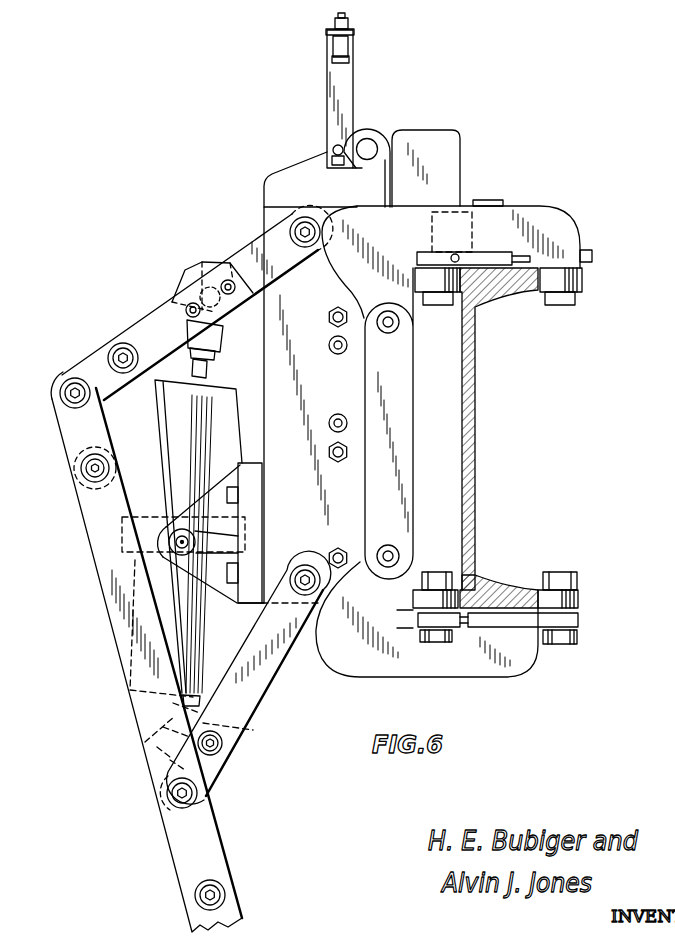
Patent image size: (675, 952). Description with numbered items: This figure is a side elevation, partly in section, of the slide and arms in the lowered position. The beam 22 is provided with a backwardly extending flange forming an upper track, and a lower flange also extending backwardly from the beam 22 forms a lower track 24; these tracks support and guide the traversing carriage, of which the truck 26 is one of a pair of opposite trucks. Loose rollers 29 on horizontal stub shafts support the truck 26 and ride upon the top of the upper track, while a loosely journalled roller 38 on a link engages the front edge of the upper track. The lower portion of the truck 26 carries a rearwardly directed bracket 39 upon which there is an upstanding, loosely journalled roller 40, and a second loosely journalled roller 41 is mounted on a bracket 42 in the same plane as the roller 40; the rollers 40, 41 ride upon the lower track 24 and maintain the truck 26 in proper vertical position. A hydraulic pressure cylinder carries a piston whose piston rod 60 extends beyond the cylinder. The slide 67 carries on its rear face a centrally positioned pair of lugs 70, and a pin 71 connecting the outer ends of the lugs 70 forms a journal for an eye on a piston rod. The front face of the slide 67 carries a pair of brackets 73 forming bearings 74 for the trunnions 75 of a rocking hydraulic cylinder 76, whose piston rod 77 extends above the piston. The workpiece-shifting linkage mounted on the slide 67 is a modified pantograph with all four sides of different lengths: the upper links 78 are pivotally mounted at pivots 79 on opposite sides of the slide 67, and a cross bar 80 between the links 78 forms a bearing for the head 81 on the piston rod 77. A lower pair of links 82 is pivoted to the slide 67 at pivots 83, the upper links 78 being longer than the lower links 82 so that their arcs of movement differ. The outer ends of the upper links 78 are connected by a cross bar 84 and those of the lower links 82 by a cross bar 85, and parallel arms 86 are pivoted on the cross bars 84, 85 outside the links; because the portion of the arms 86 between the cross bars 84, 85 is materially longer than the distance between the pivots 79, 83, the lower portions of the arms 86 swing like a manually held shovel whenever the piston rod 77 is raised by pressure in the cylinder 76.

The beam 22 is at (470, 405).
The lower track 24 is at (504, 595).
The truck 26 is at (415, 213).
The loose rollers 29 is at (457, 247).
The loosely journalled roller 38 is at (583, 287).
The rearwardly directed bracket 39 is at (581, 628).
The upstanding loosely journalled roller 40 is at (581, 600).
The second loosely journalled roller 41 is at (424, 601).
The bracket 42 is at (439, 643).
The piston rod 60 is at (375, 193).
The slide 67 is at (277, 184).
The lugs 70 is at (371, 130).
The pin 71 is at (372, 142).
The brackets 73 is at (230, 592).
The bearings 74 is at (177, 525).
The trunnions 75 is at (184, 540).
The rocking hydraulic cylinder 76 is at (166, 431).
The piston rod 77 is at (213, 364).
The upper links 78 is at (153, 327).
The pivots 79 is at (301, 223).
The cross bar 80 is at (211, 280).
The head 81 is at (218, 330).
The lower links 82 is at (258, 705).
The pivots 83 is at (303, 568).
The cross bar 84 is at (72, 393).
The cross bar 85 is at (198, 794).
The parallel arms 86 is at (214, 848).